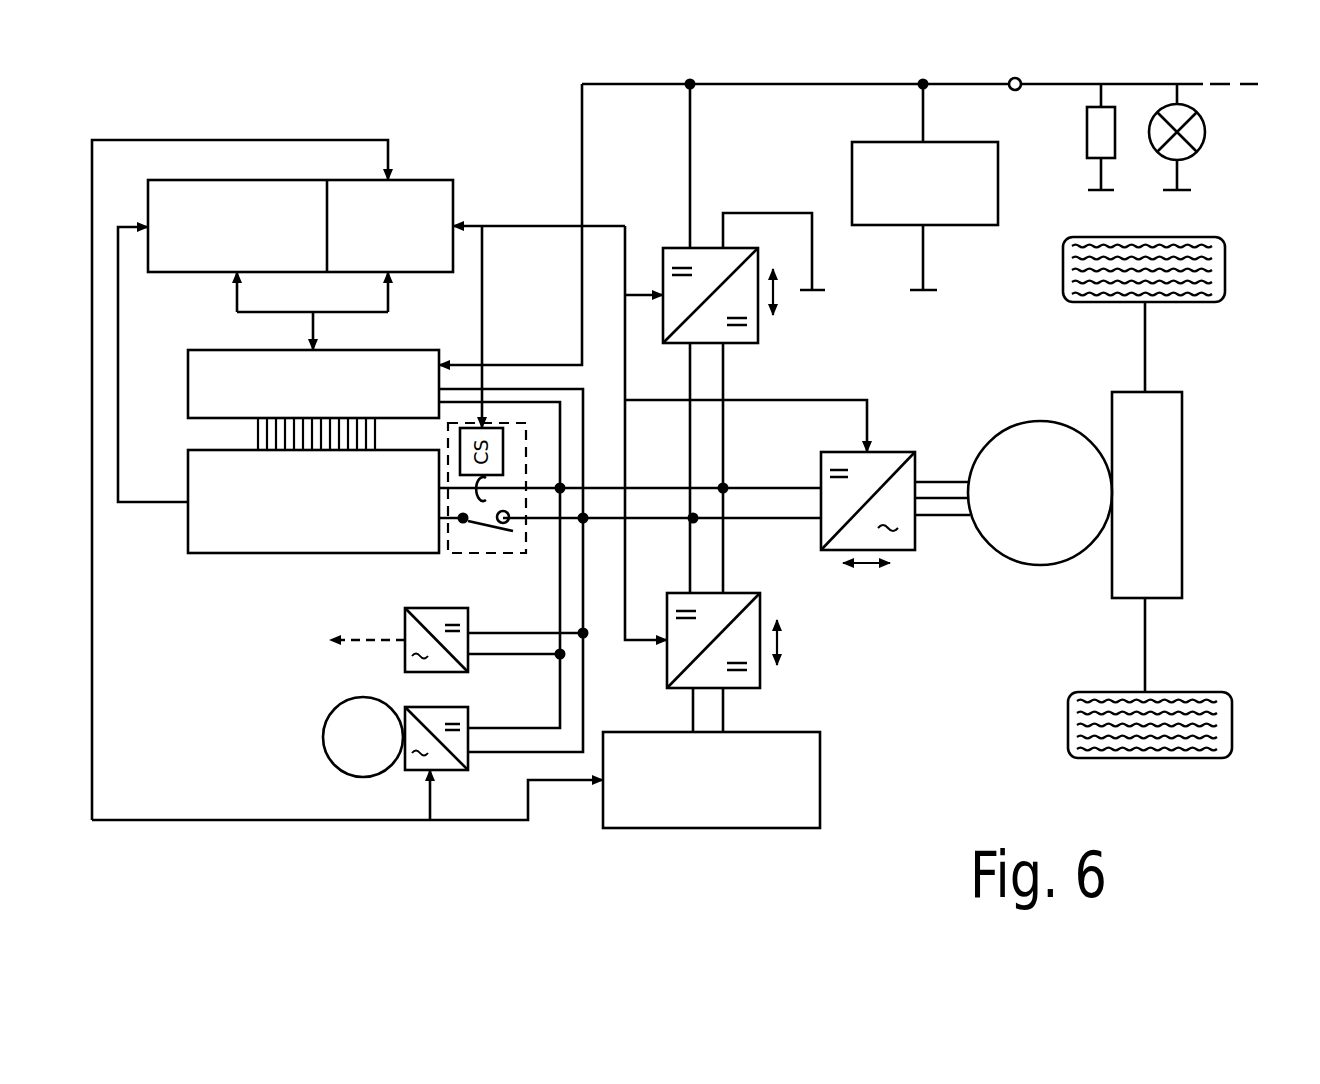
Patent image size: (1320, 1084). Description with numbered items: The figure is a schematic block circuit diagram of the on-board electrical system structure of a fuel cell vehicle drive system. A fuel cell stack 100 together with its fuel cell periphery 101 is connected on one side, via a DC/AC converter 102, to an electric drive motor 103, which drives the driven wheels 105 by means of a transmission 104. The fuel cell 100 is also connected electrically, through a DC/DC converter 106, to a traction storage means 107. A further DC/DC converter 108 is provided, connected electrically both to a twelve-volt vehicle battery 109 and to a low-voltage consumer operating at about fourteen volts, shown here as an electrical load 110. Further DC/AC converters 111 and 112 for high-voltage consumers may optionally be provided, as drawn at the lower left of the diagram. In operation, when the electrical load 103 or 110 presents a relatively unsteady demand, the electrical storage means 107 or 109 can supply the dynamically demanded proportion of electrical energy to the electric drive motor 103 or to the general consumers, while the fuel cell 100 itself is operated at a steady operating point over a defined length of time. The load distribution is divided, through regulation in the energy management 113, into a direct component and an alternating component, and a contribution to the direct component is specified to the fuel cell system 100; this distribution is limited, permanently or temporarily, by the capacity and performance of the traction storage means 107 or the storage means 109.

The fuel cell stack 100 is at (248, 530).
The fuel cell periphery 101 is at (193, 368).
The DC/AC converter 102 is at (885, 458).
The electric drive motor 103 is at (1035, 433).
The transmission 104 is at (1170, 458).
The driven wheels 105 is at (1210, 263).
The DC/DC converter 106 is at (748, 592).
The traction storage means 107 is at (808, 778).
The further DC/DC converter 108 is at (680, 251).
The vehicle battery 109 is at (860, 182).
The electrical load 110 is at (1216, 118).
The further DC/AC converter 111 is at (398, 620).
The further DC/AC converter 112 is at (405, 693).
The energy management 113 is at (446, 168).